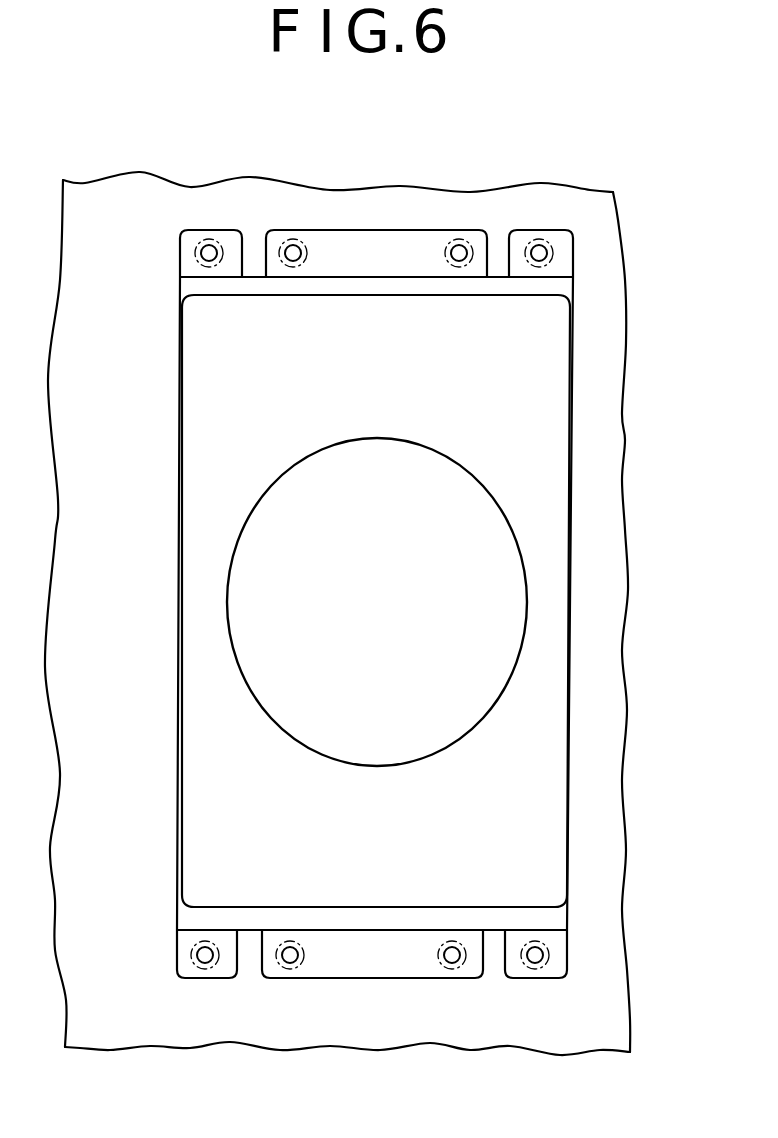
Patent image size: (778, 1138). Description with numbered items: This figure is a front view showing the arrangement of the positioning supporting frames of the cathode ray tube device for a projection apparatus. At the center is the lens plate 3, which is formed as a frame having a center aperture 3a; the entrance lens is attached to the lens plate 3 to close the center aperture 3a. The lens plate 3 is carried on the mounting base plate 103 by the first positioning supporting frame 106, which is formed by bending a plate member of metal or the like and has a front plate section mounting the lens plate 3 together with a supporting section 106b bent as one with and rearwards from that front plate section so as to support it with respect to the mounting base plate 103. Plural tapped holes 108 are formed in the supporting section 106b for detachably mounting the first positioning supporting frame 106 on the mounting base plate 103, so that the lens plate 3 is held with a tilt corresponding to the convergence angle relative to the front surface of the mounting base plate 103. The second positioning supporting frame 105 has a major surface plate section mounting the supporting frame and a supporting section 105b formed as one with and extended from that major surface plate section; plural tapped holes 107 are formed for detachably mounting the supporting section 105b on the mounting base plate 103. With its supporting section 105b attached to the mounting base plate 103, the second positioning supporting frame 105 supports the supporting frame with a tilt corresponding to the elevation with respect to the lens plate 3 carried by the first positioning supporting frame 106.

The lens plate 3 is at (207, 510).
The center aperture 3a is at (240, 674).
The mounting base plate 103 is at (148, 1025).
The second positioning supporting frame 105 is at (348, 968).
The supporting section 105b is at (372, 243).
The first positioning supporting frame 106 is at (188, 918).
The supporting section 106b is at (563, 234).
The tapped holes 107 is at (297, 245).
The tapped holes 108 is at (205, 245).